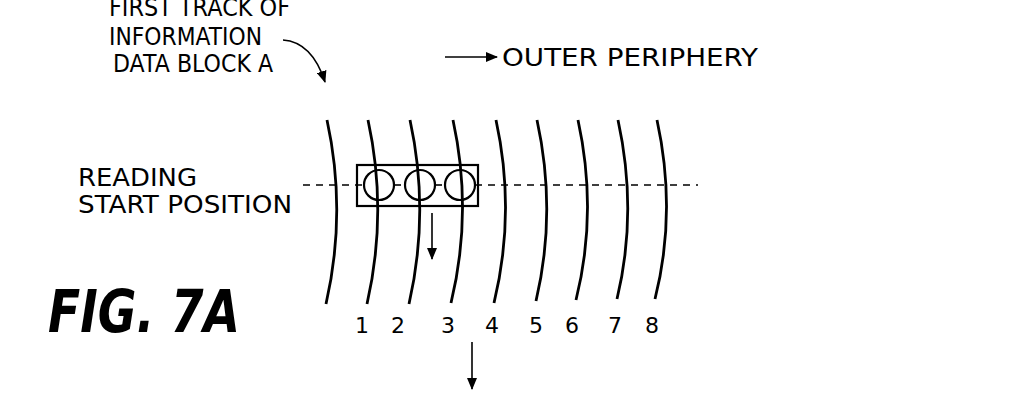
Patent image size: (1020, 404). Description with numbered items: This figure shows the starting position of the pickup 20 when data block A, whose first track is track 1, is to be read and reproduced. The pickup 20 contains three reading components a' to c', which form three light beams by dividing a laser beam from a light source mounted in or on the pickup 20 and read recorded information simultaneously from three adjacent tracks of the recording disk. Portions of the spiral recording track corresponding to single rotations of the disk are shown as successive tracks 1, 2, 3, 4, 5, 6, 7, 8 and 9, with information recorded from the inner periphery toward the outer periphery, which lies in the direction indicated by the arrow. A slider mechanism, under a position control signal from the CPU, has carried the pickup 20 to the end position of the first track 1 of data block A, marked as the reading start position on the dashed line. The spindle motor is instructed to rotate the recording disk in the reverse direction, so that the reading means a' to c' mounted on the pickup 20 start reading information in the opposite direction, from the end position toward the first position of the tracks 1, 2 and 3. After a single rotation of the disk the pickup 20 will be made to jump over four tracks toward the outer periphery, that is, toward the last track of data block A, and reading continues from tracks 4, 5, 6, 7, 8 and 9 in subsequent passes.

The track 1 is at (327, 197).
The track 2 is at (366, 197).
The track 3 is at (412, 197).
The track 4 is at (455, 196).
The track 5 is at (499, 196).
The track 6 is at (537, 195).
The track 7 is at (579, 195).
The track 8 is at (617, 194).
The track 9 is at (658, 194).
The pickup 20 is at (357, 164).